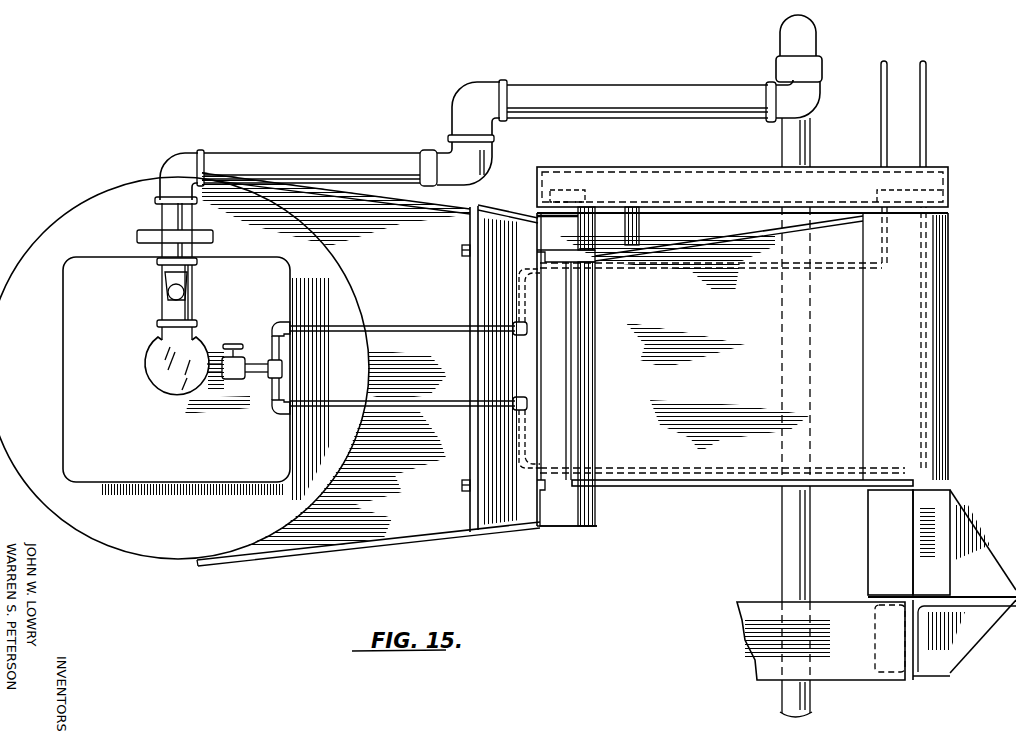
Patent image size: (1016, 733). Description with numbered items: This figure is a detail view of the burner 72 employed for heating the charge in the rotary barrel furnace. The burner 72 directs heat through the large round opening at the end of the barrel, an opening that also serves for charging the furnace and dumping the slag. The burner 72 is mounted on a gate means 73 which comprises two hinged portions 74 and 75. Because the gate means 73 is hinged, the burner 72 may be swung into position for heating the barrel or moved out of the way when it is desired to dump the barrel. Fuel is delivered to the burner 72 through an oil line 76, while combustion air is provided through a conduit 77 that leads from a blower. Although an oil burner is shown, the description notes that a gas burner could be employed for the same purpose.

The burner 72 is at (100, 522).
The gate means 73 is at (614, 524).
The hinged portion 74 is at (425, 520).
The hinged portion 75 is at (716, 458).
The oil line 76 is at (452, 400).
The conduit 77 is at (597, 88).